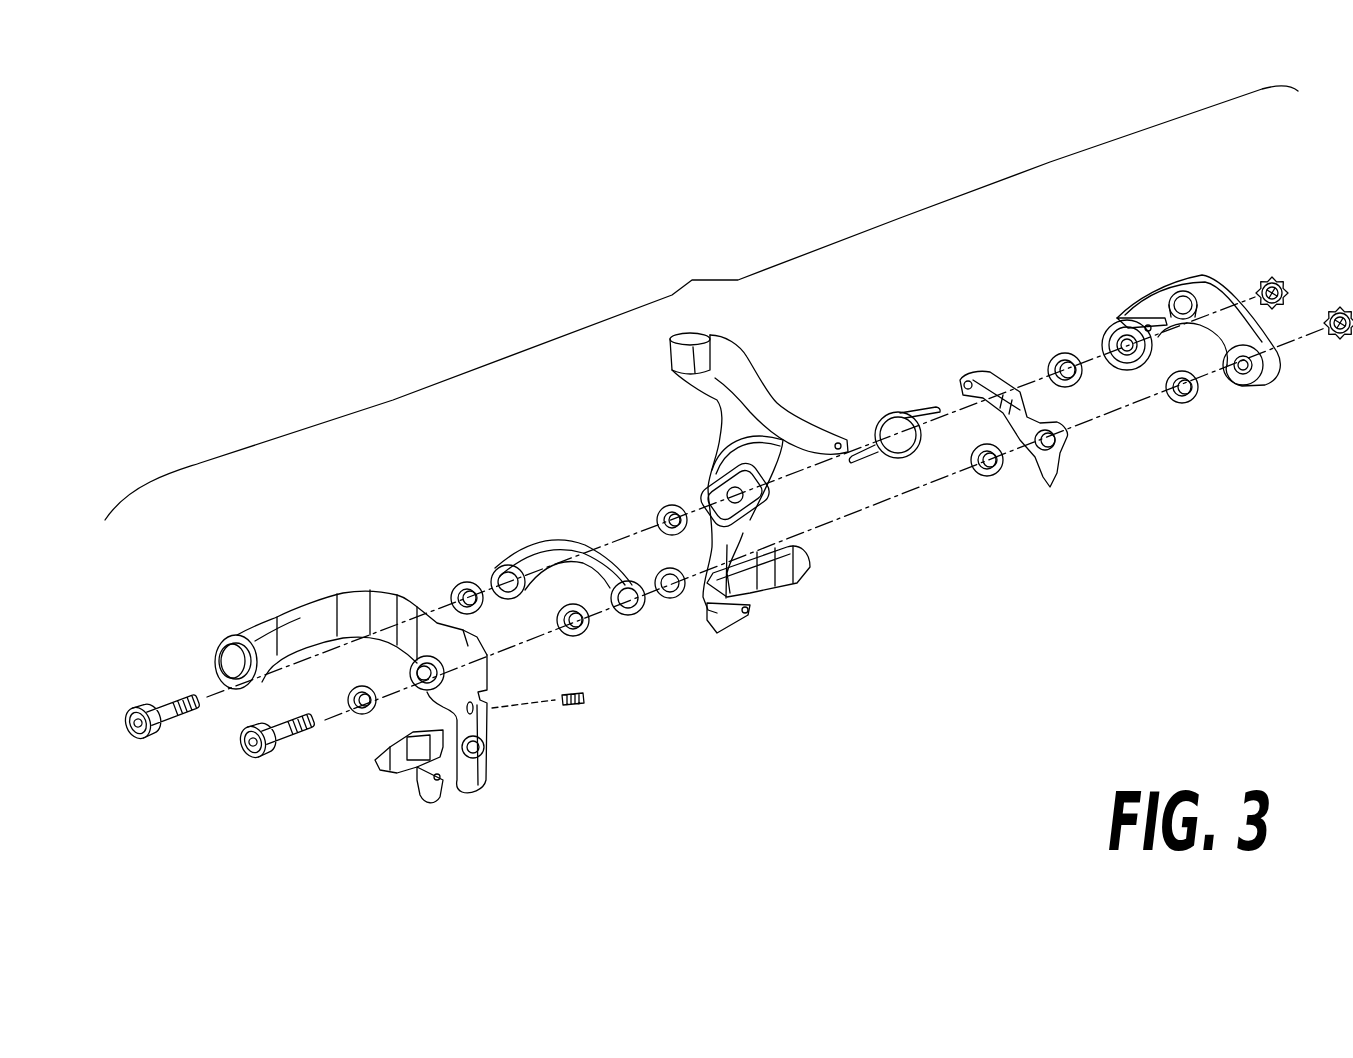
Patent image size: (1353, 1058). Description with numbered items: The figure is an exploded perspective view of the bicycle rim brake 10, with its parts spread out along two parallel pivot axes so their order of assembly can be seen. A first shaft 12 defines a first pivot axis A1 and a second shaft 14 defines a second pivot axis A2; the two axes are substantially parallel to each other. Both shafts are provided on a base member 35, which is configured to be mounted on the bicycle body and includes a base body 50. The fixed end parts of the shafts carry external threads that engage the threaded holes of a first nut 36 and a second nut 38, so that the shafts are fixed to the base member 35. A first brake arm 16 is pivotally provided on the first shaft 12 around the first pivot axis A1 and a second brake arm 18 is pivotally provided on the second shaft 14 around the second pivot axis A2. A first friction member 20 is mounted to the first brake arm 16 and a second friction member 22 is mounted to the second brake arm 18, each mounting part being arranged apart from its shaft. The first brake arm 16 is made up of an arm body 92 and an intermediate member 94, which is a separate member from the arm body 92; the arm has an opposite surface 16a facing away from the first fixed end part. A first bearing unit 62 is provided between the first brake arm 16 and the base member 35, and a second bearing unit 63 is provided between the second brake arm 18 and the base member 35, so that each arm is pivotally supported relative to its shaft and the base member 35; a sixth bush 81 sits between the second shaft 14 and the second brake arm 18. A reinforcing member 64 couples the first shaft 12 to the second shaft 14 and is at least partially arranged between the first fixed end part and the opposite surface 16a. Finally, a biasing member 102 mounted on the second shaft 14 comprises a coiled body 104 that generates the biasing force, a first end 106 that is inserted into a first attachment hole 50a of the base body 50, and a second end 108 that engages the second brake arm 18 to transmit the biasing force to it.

The bicycle rim brake 10 is at (701, 303).
The first shaft 12 is at (261, 773).
The second shaft 14 is at (146, 753).
The first brake arm 16 is at (780, 578).
The opposite surface 16a is at (347, 612).
The second brake arm 18 is at (758, 366).
The first friction member 20 is at (416, 789).
The second friction member 22 is at (788, 608).
The base member 35 is at (1170, 297).
The first nut 36 is at (1340, 305).
The second nut 38 is at (1272, 278).
The base body 50 is at (1185, 292).
The first attachment hole 50a is at (1128, 318).
The first bearing unit 62 is at (1189, 413).
The second bearing unit 63 is at (1053, 342).
The reinforcing member 64 is at (546, 527).
The sixth bush 81 is at (988, 478).
The arm body 92 is at (500, 721).
The intermediate member 94 is at (1055, 500).
The biasing member 102 is at (904, 400).
The coiled body 104 is at (862, 445).
The first end 106 is at (938, 405).
The second end 108 is at (832, 420).
The first pivot axis A1 is at (327, 713).
The second pivot axis A2 is at (213, 690).